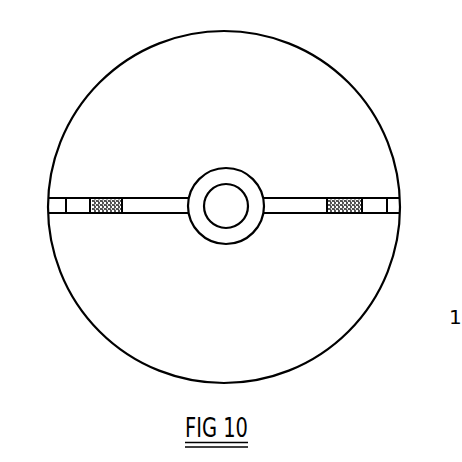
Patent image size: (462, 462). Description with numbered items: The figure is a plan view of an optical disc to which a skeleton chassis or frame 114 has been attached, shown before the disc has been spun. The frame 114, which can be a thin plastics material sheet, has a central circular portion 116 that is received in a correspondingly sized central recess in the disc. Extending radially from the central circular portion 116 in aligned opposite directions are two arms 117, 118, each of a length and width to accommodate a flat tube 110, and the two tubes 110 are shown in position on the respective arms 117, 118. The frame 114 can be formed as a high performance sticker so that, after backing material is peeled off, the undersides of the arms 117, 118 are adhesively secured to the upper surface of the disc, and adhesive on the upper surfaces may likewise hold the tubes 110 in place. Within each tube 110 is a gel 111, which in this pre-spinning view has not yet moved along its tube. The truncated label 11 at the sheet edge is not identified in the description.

The tube 110 is at (366, 218).
The gel 111 is at (108, 213).
The frame 114 is at (284, 194).
The central circular portion 116 is at (199, 223).
The arm 117 is at (143, 206).
The arm 118 is at (312, 214).
The element 11 is at (374, 160).